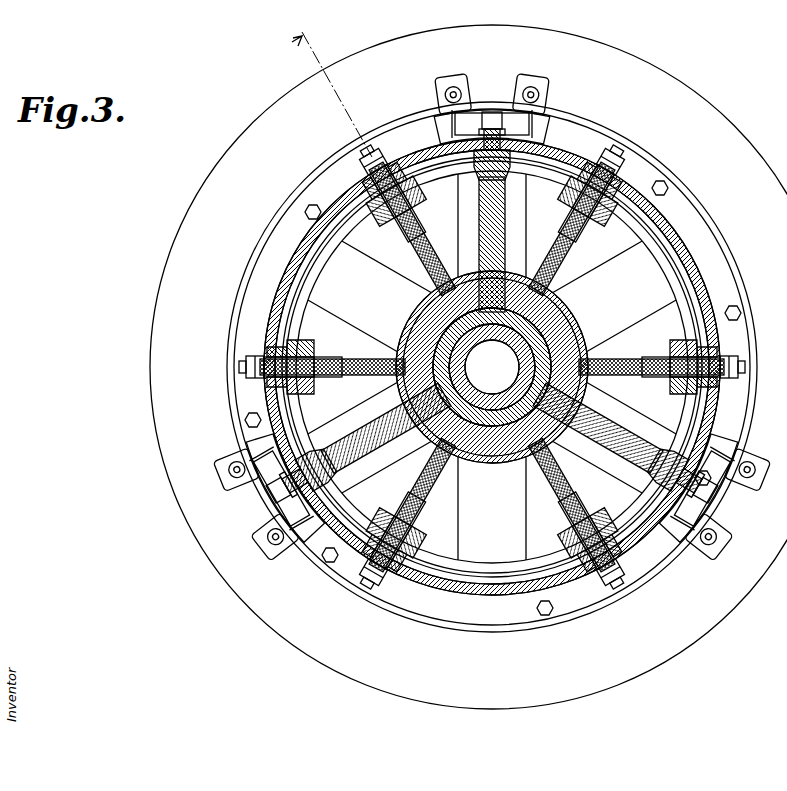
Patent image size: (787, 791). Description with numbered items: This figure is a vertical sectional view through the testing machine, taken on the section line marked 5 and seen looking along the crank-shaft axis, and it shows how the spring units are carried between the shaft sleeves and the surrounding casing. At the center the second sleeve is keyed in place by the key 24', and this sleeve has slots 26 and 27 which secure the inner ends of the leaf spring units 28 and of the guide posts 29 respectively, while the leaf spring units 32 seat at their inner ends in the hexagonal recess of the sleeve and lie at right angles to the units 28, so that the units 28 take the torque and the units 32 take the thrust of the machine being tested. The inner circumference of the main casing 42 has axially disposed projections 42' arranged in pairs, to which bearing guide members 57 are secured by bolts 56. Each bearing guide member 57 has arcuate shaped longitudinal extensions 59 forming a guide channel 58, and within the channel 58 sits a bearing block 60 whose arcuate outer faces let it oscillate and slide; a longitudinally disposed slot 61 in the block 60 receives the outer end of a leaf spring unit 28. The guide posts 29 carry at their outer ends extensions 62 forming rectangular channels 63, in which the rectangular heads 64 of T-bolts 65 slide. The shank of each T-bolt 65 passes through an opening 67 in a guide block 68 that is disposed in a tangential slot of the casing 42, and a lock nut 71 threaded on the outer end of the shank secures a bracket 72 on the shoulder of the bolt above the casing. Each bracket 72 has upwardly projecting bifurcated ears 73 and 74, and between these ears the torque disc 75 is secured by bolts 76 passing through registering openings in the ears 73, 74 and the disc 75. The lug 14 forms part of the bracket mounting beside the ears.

The section line 5- 5 is at (488, 370).
The bracket lug 14 is at (547, 92).
The key 24' is at (467, 398).
The slot 26 is at (430, 236).
The slot 27 is at (506, 262).
The leaf spring unit 28 is at (425, 216).
The guide post 29 is at (526, 228).
The leaf spring unit 32 is at (492, 367).
The main casing 42 is at (492, 367).
The axially disposed projection 42' is at (492, 367).
The bolt 56 is at (381, 166).
The bearing guide member 57 is at (366, 172).
The guide channel 58 is at (690, 396).
The arcuate shaped longitudinal extension 59 is at (424, 196).
The bearing block 60 is at (425, 206).
The longitudinally disposed slot 61 is at (400, 216).
The extension 62 is at (698, 456).
The rectangular channel 63 is at (482, 160).
The rectangular head 64 is at (514, 186).
The T-bolt 65 is at (492, 328).
The opening 67 is at (492, 319).
The guide block 68 is at (545, 135).
The lock nut 71 is at (492, 112).
The bracket 72 is at (548, 140).
The bifurcated ear 73 is at (438, 91).
The bifurcated ear 74 is at (716, 552).
The torque disc 75 is at (468, 367).
The bolt 76 is at (456, 85).